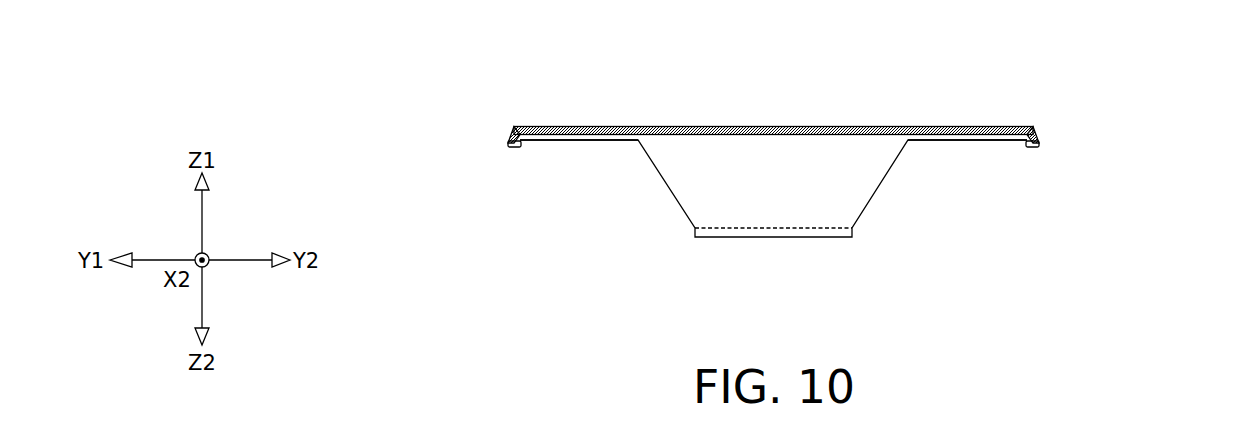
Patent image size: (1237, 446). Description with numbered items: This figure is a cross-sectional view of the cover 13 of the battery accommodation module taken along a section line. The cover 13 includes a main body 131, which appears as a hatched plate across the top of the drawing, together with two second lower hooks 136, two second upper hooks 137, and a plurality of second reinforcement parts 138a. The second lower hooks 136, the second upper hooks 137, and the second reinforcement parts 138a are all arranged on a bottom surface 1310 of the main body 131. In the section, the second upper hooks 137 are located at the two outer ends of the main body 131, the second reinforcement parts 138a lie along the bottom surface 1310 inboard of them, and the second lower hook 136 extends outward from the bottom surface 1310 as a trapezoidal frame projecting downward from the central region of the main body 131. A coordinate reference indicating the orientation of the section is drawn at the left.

The cover 13 is at (1230, 80).
The main body 131 is at (793, 128).
The bottom surface 1310 is at (760, 141).
The second lower hook 136 is at (899, 186).
The second upper hook 137 is at (510, 156).
The second reinforcement part 138a is at (567, 140).